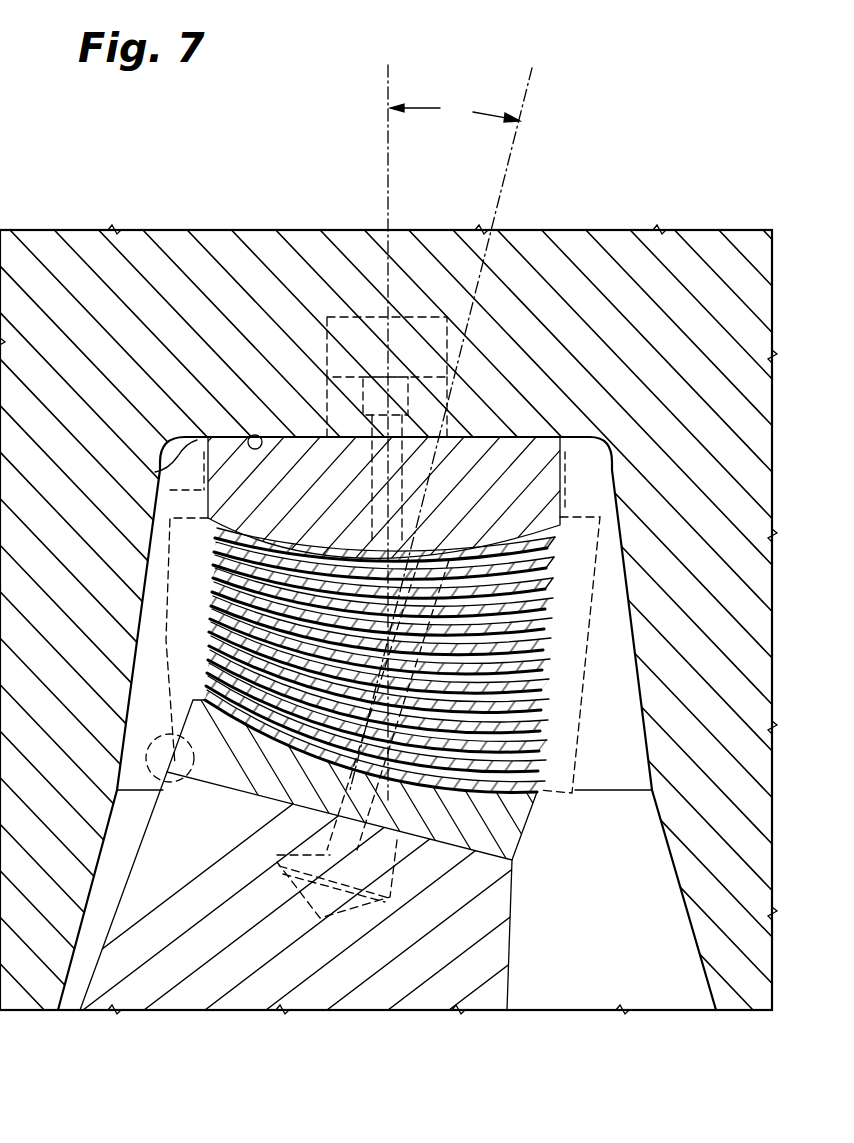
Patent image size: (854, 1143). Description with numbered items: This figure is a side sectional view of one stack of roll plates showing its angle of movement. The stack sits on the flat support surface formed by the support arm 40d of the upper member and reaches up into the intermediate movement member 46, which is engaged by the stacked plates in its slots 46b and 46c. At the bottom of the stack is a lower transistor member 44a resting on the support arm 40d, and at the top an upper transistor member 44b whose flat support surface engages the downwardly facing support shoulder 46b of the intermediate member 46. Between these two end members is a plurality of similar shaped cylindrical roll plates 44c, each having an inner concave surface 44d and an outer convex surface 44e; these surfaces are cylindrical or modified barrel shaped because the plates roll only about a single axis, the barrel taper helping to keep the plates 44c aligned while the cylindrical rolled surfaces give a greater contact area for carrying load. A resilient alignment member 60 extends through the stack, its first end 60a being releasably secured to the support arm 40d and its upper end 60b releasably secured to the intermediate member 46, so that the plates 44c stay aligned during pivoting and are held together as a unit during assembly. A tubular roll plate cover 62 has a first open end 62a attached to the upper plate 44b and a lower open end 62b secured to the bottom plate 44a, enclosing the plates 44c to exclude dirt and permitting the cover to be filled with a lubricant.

The intermediate movement member 46 is at (172, 243).
The downwardly facing support shoulder (slot) 46b is at (155, 473).
The slot 46c is at (248, 436).
The upper transistor member 44b is at (517, 447).
The cylindrical roll plates 44c is at (567, 625).
The inner concave surface 44d is at (560, 527).
The outer convex surface 44e is at (553, 550).
The lower transistor member 44a is at (500, 818).
The support arm 40d is at (185, 993).
The tubular roll plate cover 62 is at (168, 525).
The first open end of cover 62a is at (160, 492).
The lower open end of cover 62b is at (175, 785).
The resilient alignment member 60 is at (300, 836).
The first end of alignment member 60a is at (273, 857).
The upper end of alignment member 60b is at (388, 347).